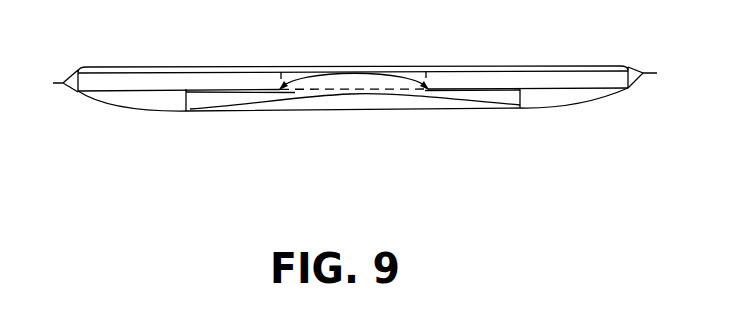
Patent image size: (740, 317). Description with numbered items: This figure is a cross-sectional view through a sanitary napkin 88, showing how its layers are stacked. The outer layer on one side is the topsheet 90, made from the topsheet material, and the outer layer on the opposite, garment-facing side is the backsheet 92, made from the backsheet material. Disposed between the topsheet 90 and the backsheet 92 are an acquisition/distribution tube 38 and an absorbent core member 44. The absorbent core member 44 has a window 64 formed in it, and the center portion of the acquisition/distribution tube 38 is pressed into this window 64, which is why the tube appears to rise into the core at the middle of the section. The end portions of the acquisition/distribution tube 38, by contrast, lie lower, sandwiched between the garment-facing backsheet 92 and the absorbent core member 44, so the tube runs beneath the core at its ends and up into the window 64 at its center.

The sanitary napkin 88 is at (369, 100).
The absorbent core member 44 is at (177, 81).
The topsheet 90 is at (562, 65).
The window 64 is at (431, 69).
The acquisition/distribution tube 38 is at (354, 86).
The backsheet 92 is at (225, 113).